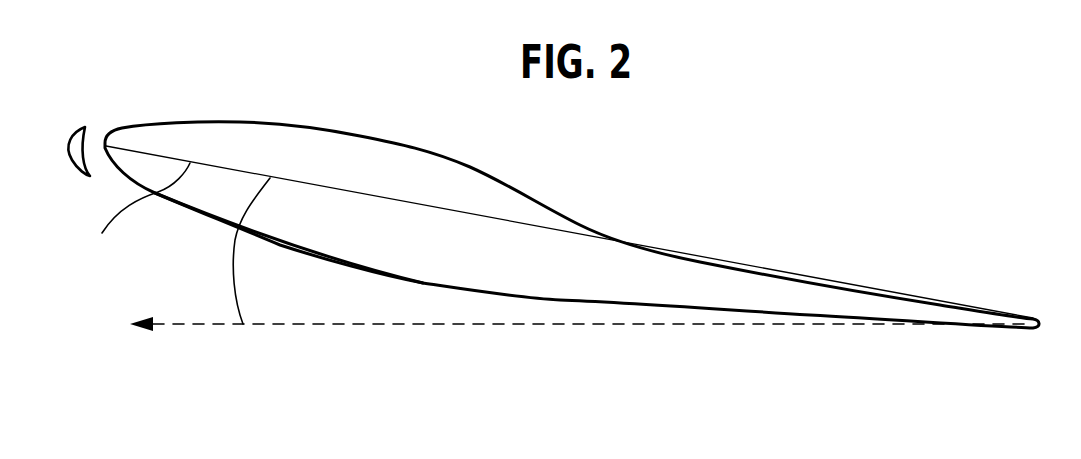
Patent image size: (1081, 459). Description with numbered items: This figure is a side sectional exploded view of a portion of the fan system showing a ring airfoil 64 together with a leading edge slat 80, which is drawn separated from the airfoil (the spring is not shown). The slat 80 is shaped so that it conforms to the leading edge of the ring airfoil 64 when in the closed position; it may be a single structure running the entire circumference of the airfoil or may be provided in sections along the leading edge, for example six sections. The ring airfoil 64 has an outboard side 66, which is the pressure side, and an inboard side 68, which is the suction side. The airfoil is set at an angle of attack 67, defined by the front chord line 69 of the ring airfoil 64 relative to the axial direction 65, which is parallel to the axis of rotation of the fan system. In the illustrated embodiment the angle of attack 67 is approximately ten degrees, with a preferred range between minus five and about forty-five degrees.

The ring airfoil 64 is at (337, 95).
The axial direction 65 is at (378, 330).
The outboard side 66 is at (620, 242).
The angle of attack 67 is at (232, 255).
The inboard side 68 is at (423, 283).
The front chord line 69 is at (136, 214).
The leading edge slat 80 is at (88, 115).